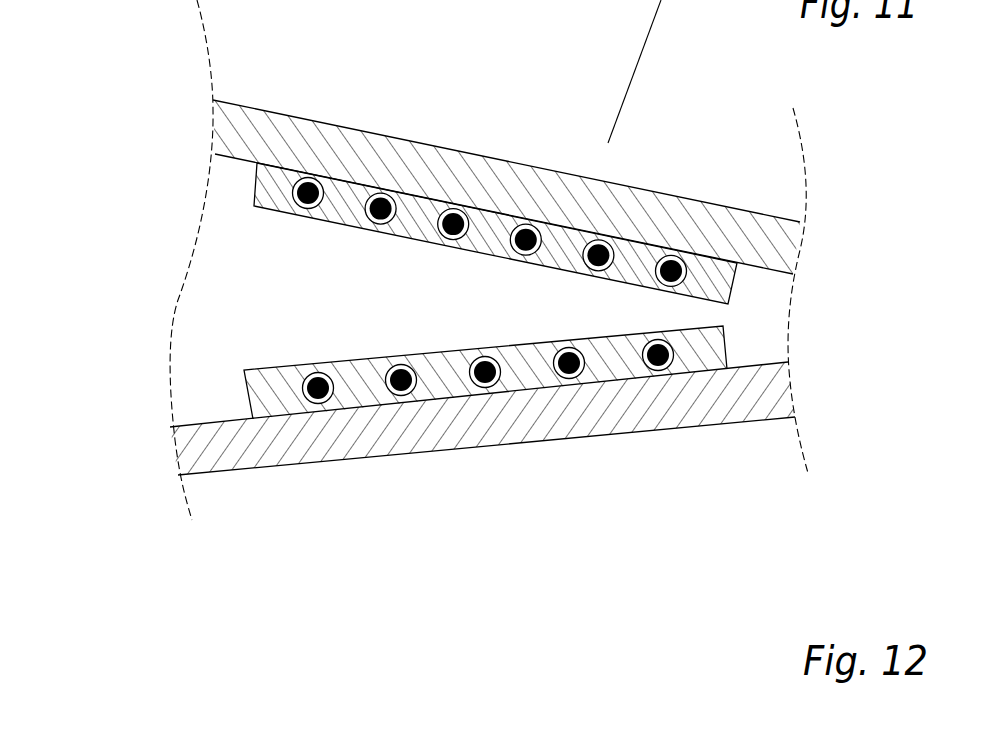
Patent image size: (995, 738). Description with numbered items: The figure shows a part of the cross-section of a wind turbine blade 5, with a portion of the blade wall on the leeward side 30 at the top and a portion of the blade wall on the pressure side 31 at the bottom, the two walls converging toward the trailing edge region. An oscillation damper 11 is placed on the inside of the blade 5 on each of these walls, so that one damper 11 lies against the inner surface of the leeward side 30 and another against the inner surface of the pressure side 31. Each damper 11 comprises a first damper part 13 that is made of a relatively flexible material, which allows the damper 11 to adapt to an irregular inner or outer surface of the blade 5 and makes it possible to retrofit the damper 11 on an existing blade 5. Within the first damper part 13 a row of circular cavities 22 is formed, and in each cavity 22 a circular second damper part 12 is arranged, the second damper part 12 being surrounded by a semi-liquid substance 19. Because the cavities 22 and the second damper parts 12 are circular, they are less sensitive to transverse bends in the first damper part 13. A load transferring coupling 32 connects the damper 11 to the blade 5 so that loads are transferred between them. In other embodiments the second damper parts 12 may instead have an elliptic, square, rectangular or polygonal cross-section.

The blade 5 is at (247, 282).
The oscillation damper 11 is at (415, 207).
The second damper part 12 is at (410, 398).
The first damper part 13 is at (527, 372).
The semi-liquid substance 19 is at (332, 392).
The cavity 22 is at (670, 362).
The leeward side 30 is at (273, 112).
The pressure side 31 is at (242, 472).
The load transferring coupling 32 is at (725, 263).